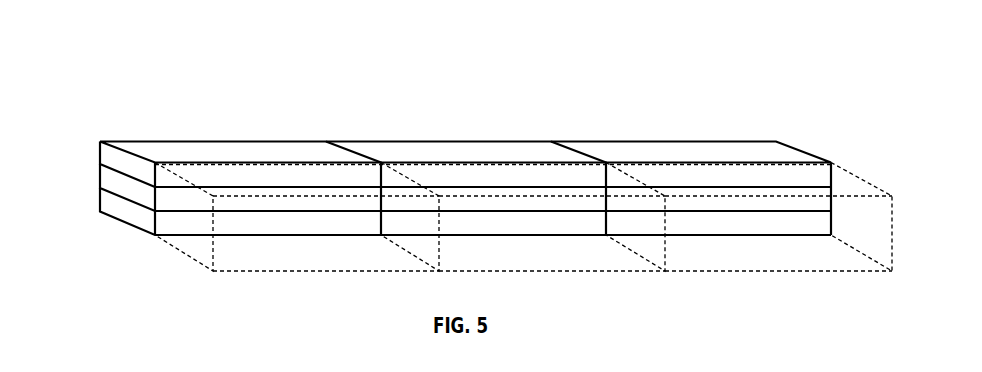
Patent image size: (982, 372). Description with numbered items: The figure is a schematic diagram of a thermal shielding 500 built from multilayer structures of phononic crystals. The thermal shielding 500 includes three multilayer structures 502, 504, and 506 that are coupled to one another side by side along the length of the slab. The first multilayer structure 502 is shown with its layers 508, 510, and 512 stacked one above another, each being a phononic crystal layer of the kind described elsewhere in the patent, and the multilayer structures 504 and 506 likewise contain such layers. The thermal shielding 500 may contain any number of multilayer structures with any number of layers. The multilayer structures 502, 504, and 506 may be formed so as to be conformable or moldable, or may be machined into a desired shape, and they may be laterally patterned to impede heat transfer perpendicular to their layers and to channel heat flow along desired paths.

The thermal shielding 500 is at (161, 56).
The multilayer structure of phononic crystals 502 is at (213, 148).
The multilayer structure of phononic crystals 504 is at (436, 147).
The multilayer structure of phononic crystals 506 is at (691, 147).
The layer 508 is at (100, 153).
The layer 510 is at (100, 180).
The layer 512 is at (100, 207).